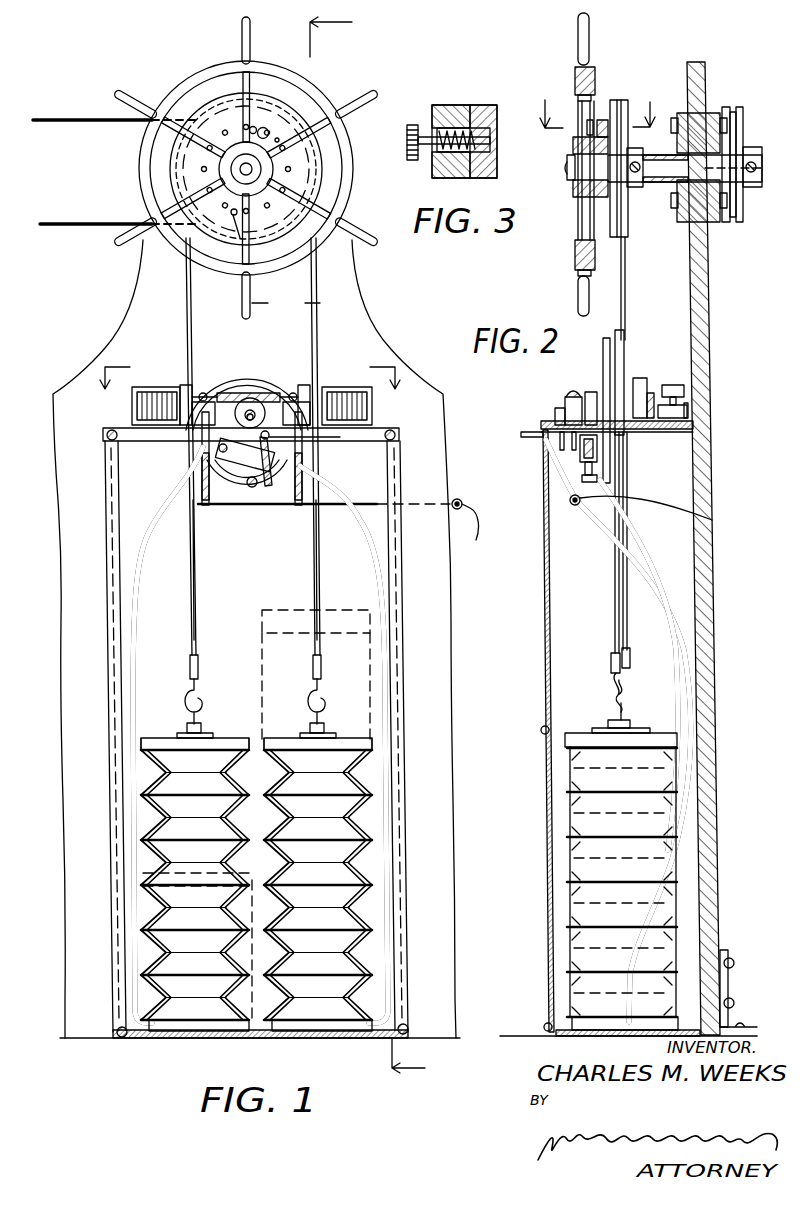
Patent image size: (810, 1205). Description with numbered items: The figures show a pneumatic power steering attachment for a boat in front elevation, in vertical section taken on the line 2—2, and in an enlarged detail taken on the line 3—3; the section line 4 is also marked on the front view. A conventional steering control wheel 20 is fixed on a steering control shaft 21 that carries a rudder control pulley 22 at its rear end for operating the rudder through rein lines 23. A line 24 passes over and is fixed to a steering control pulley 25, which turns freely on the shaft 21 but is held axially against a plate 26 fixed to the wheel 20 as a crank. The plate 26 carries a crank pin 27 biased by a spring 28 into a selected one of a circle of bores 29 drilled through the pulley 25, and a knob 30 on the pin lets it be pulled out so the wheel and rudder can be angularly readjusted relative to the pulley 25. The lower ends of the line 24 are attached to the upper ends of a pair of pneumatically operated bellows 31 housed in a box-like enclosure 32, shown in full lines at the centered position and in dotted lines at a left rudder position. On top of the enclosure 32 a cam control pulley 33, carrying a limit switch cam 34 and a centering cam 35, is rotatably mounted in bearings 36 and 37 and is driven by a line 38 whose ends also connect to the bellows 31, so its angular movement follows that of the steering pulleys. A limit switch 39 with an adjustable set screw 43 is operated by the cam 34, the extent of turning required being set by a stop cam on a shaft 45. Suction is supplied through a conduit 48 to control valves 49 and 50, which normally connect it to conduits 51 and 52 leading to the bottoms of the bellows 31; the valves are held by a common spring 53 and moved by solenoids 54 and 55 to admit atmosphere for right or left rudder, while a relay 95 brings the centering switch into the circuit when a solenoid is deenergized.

In FIG. 1, the section line 2— 2 is at (376, 541).
In FIG. 2, the section line 3— 3 is at (598, 99).
In FIG. 1, the section line 4- 4 is at (249, 395).
In FIG. 1, the steering control wheel 20 is at (332, 150).
In FIG. 2, the steering control wheel 20 is at (576, 254).
In FIG. 2, the steering control shaft 21 is at (662, 186).
In FIG. 2, the rudder control pulley 22 is at (738, 112).
In FIG. 1, the rein lines 23 is at (63, 125).
In FIG. 1, the line 24 is at (189, 344).
In FIG. 2, the line 24 is at (624, 280).
In FIG. 1, the steering control pulley 25 is at (290, 122).
In FIG. 3, the steering control pulley 25 is at (482, 105).
In FIG. 2, the steering control pulley 25 is at (618, 103).
In FIG. 1, the plate 26 is at (255, 126).
In FIG. 3, the plate 26 is at (444, 106).
In FIG. 2, the plate 26 is at (576, 147).
In FIG. 3, the crank pin 27 is at (422, 147).
In FIG. 2, the crank pin 27 is at (592, 122).
In FIG. 3, the spring 28 is at (452, 131).
In FIG. 1, the bores 29 is at (236, 215).
In FIG. 1, the knob 30 is at (266, 129).
In FIG. 3, the knob 30 is at (412, 125).
In FIG. 2, the knob 30 is at (586, 128).
In FIG. 1, the pneumatically operated bellows 31 is at (270, 750).
In FIG. 2, the pneumatically operated bellows 31 is at (575, 774).
In FIG. 1, the box-like enclosure 32 is at (404, 632).
In FIG. 2, the box-like enclosure 32 is at (546, 630).
In FIG. 1, the cam control pulley 33 is at (270, 362).
In FIG. 2, the cam control pulley 33 is at (616, 358).
In FIG. 1, the limit switch cam 34 is at (244, 443).
In FIG. 2, the limit switch cam 34 is at (597, 392).
In FIG. 2, the centering cam 35 is at (650, 392).
In FIG. 2, the bearing 36 is at (599, 348).
In FIG. 2, the bearing 37 is at (647, 432).
In FIG. 1, the line 38 is at (315, 553).
In FIG. 2, the line 38 is at (614, 560).
In FIG. 1, the limit switch 39 is at (211, 465).
In FIG. 2, the limit switch 39 is at (597, 450).
In FIG. 1, the adjustable set screw 43 is at (262, 470).
In FIG. 2, the adjustable set screw 43 is at (597, 468).
In FIG. 1, the shaft 45 is at (298, 440).
In FIG. 2, the shaft 45 is at (522, 432).
In FIG. 1, the conduit 48 is at (458, 499).
In FIG. 2, the conduit 48 is at (572, 507).
In FIG. 1, the control valve 49 is at (212, 390).
In FIG. 1, the control valve 50 is at (290, 395).
In FIG. 1, the conduit 51 is at (175, 500).
In FIG. 2, the conduit 51 is at (676, 590).
In FIG. 1, the conduit 52 is at (325, 505).
In FIG. 2, the conduit 52 is at (670, 578).
In FIG. 1, the spring 53 is at (249, 392).
In FIG. 1, the solenoid 54 is at (158, 392).
In FIG. 2, the solenoid 54 is at (564, 388).
In FIG. 1, the solenoid 55 is at (345, 390).
In FIG. 2, the relay 95 is at (663, 387).